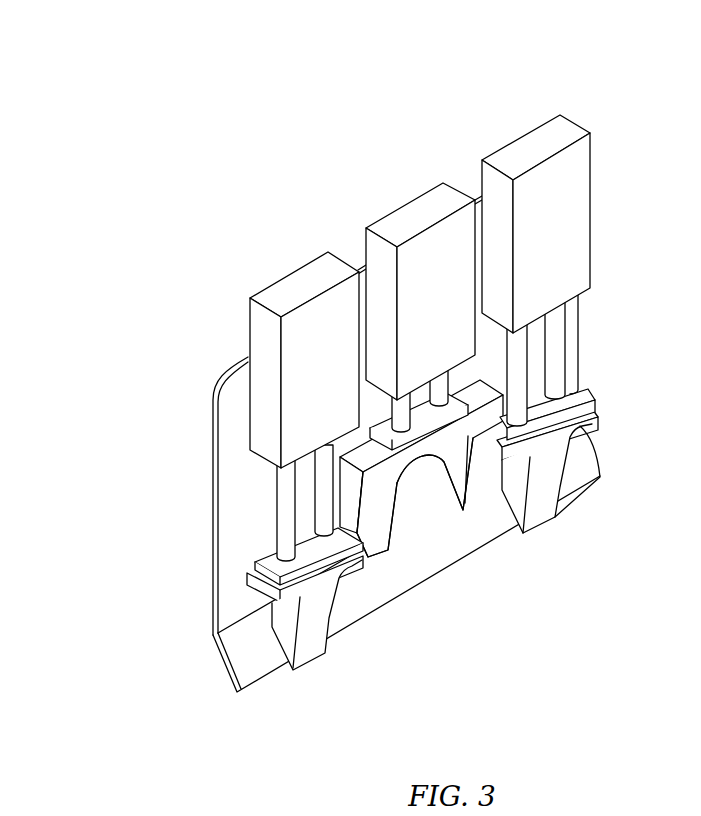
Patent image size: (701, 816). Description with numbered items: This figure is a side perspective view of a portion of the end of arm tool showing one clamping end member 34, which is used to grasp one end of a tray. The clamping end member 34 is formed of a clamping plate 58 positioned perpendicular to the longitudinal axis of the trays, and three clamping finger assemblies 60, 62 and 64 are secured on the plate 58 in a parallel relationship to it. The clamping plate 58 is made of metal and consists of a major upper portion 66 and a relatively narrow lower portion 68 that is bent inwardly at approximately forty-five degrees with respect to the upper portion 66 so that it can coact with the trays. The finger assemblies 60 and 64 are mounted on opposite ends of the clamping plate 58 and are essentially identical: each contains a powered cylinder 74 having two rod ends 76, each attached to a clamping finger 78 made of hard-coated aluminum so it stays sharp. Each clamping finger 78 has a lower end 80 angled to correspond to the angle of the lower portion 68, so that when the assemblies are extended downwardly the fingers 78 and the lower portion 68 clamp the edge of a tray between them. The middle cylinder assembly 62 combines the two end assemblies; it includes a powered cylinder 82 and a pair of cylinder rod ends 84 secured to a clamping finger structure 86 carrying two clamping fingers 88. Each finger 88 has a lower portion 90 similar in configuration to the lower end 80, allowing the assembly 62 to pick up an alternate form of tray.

The clamping end member 34 is at (118, 406).
The clamping plate 58 is at (228, 446).
The clamping finger assembly 60 is at (306, 245).
The cylinder assembly 62 is at (420, 178).
The clamping finger assembly 64 is at (537, 108).
The major upper portion 66 is at (237, 493).
The lower portion 68 is at (243, 653).
The powered cylinder 74 is at (259, 339).
The rod ends 76 is at (316, 500).
The clamping finger 78 is at (323, 600).
The lower end 80 is at (312, 650).
The powered cylinder 82 is at (450, 243).
The cylinder rod ends 84 is at (402, 412).
The clamping finger structure 86 is at (424, 461).
The clamping fingers 88 is at (378, 487).
The lower portion 90 is at (370, 553).